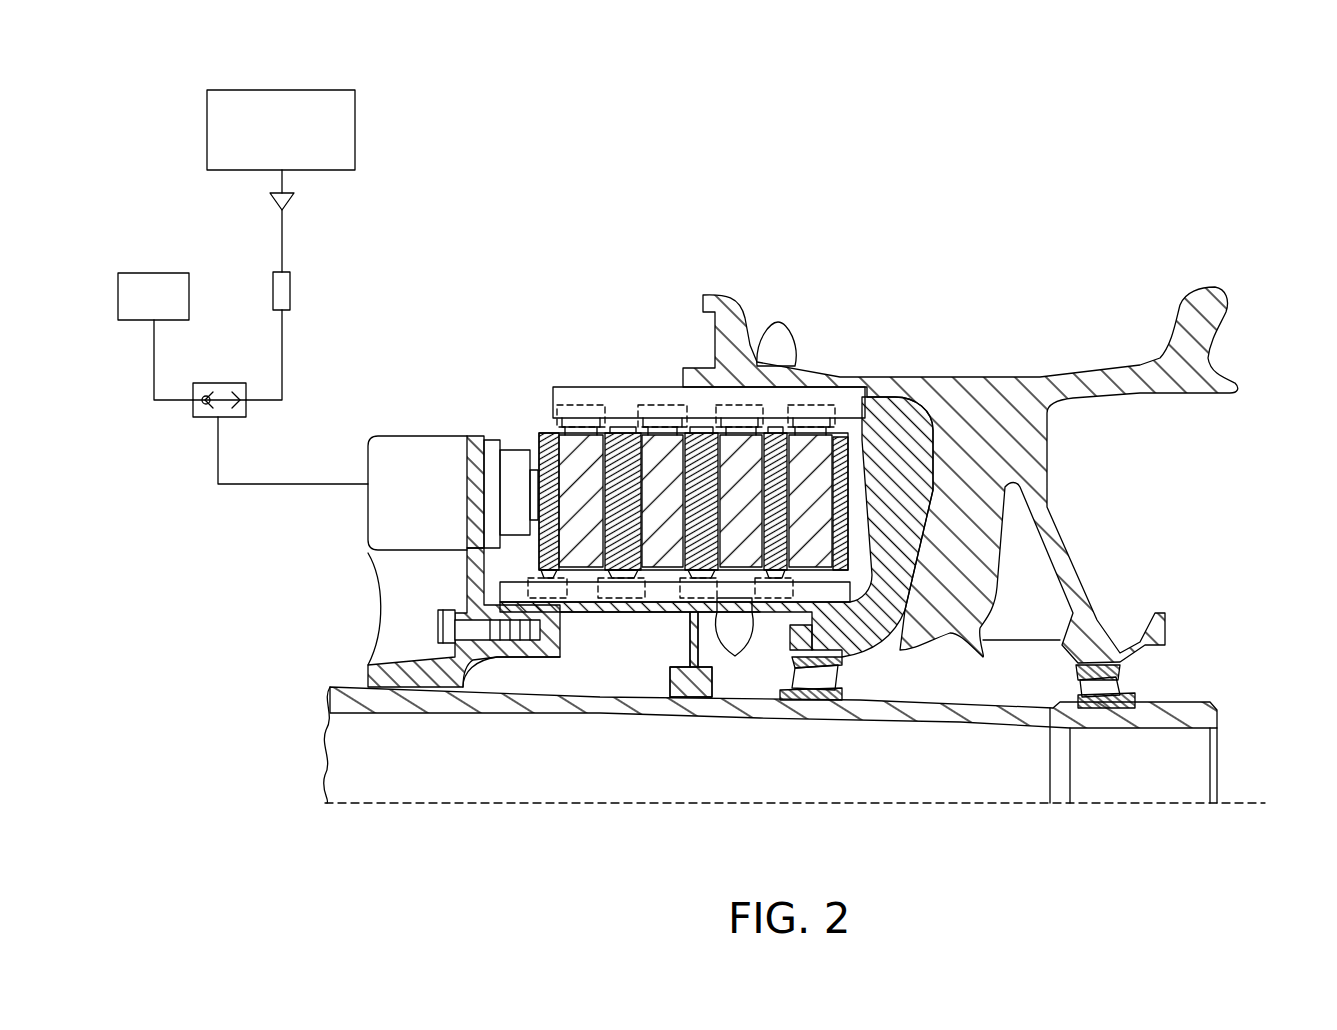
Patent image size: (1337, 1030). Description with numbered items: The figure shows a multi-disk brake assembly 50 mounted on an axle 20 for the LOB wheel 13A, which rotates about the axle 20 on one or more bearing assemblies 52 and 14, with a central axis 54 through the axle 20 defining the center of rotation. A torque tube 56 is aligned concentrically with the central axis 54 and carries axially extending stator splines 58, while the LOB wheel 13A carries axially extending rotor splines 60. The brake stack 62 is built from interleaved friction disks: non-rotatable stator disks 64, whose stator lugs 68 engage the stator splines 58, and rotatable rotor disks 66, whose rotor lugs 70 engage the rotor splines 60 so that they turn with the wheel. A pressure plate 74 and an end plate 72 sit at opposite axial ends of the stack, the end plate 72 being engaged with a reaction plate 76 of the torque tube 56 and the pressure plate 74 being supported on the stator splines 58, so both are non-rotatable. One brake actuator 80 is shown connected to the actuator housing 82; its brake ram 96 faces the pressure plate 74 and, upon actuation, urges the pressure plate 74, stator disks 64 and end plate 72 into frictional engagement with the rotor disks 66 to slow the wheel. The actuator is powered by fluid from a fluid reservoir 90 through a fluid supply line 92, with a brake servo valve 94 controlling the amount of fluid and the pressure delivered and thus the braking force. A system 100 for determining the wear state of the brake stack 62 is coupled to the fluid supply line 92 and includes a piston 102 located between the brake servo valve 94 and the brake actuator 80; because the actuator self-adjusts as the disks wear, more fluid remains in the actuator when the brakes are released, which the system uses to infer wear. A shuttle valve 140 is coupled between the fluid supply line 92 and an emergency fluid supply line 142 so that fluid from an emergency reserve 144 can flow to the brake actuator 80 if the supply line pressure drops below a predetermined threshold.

The multi-disk brake assembly 50 is at (468, 80).
The fluid reservoir 90 is at (294, 141).
The brake servo valve 94 is at (295, 199).
The system for determining a wear state 100 is at (258, 284).
The piston 102 is at (292, 284).
The fluid supply line 92 is at (283, 328).
The emergency reserve 144 is at (170, 307).
The emergency fluid supply line 142 is at (154, 360).
The shuttle valve 140 is at (193, 410).
The brake actuator 80 is at (403, 433).
The actuator housing 82 is at (385, 636).
The brake ram 96 is at (515, 455).
The torque tube 56 is at (592, 605).
The stator spline 58 is at (663, 594).
The stator lug 68 is at (735, 657).
The rotor spline 60 is at (626, 396).
The brake stack 62 is at (545, 424).
The pressure plate 74 is at (545, 442).
The rotor disk 66 is at (584, 445).
The stator disk 64 is at (622, 572).
The end plate 72 is at (850, 433).
The reaction plate 76 is at (868, 497).
The rotor lug 70 is at (745, 405).
The LOB wheel 13A is at (986, 386).
The bearing 14 is at (820, 680).
The bearing assembly 52 is at (1122, 682).
The axle 20 is at (975, 708).
The central axis 54 is at (1266, 803).